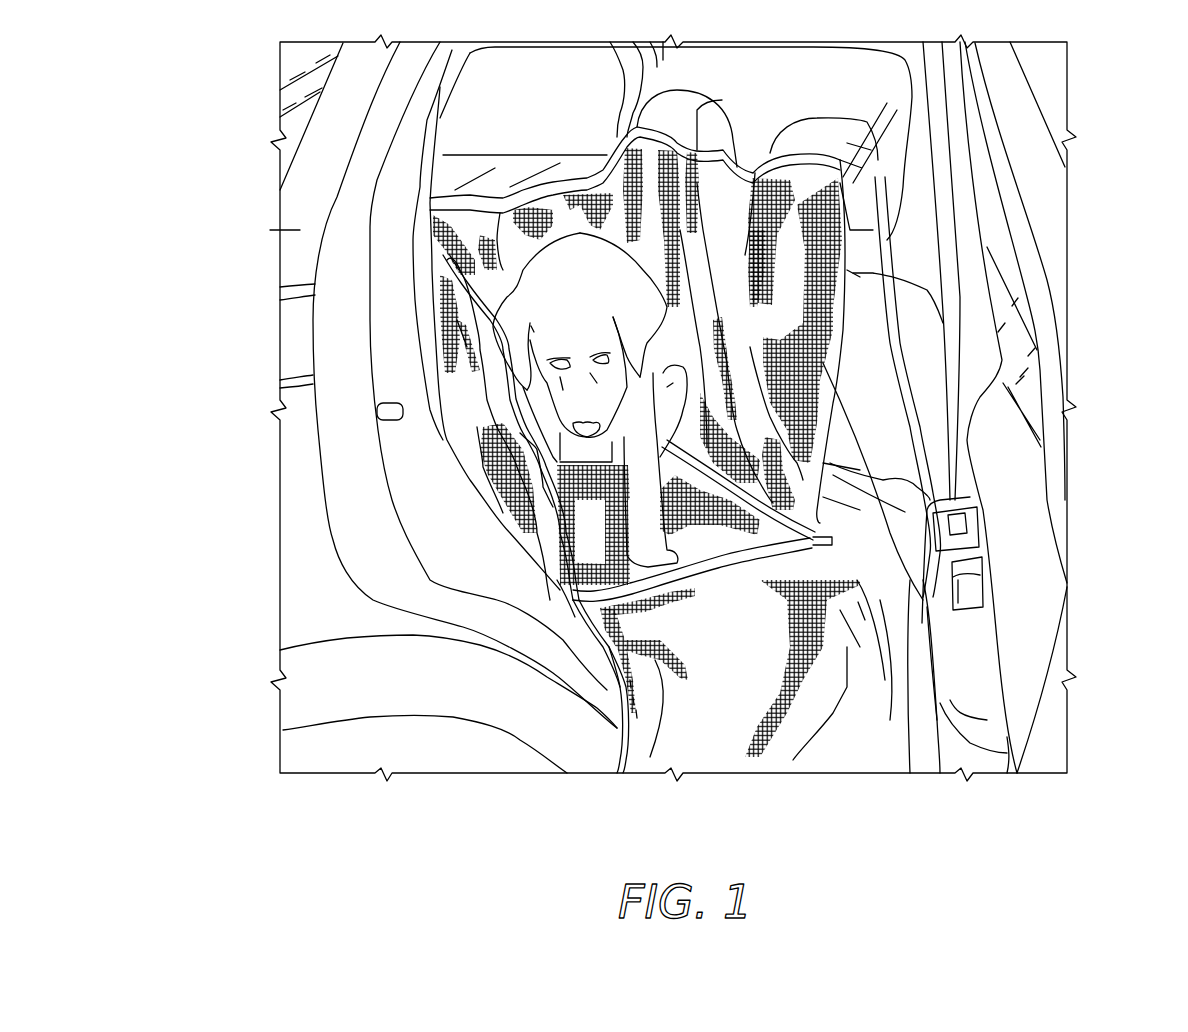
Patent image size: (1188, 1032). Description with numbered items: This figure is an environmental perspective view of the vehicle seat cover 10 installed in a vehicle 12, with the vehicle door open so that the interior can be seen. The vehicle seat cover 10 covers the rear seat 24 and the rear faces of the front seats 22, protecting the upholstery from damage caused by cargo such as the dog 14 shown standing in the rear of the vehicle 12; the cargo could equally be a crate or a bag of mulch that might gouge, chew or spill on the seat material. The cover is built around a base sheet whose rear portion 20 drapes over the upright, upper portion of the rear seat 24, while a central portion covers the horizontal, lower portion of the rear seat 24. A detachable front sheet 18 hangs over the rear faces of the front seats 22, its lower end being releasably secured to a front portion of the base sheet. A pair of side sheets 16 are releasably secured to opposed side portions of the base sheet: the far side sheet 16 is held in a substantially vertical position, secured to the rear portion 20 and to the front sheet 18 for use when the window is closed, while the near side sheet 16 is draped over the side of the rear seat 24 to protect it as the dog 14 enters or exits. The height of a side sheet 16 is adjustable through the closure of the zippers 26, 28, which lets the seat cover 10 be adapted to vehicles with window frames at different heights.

The vehicle seat cover 10 is at (1057, 852).
The vehicle 12 is at (297, 232).
The dog 14 is at (590, 294).
The side sheet 16 is at (847, 757).
The front sheet 18 is at (823, 367).
The rear portion 20 is at (450, 392).
The front seat 22 is at (817, 127).
The rear seat 24 is at (503, 513).
The zipper 26 is at (613, 757).
The zipper 28 is at (850, 590).